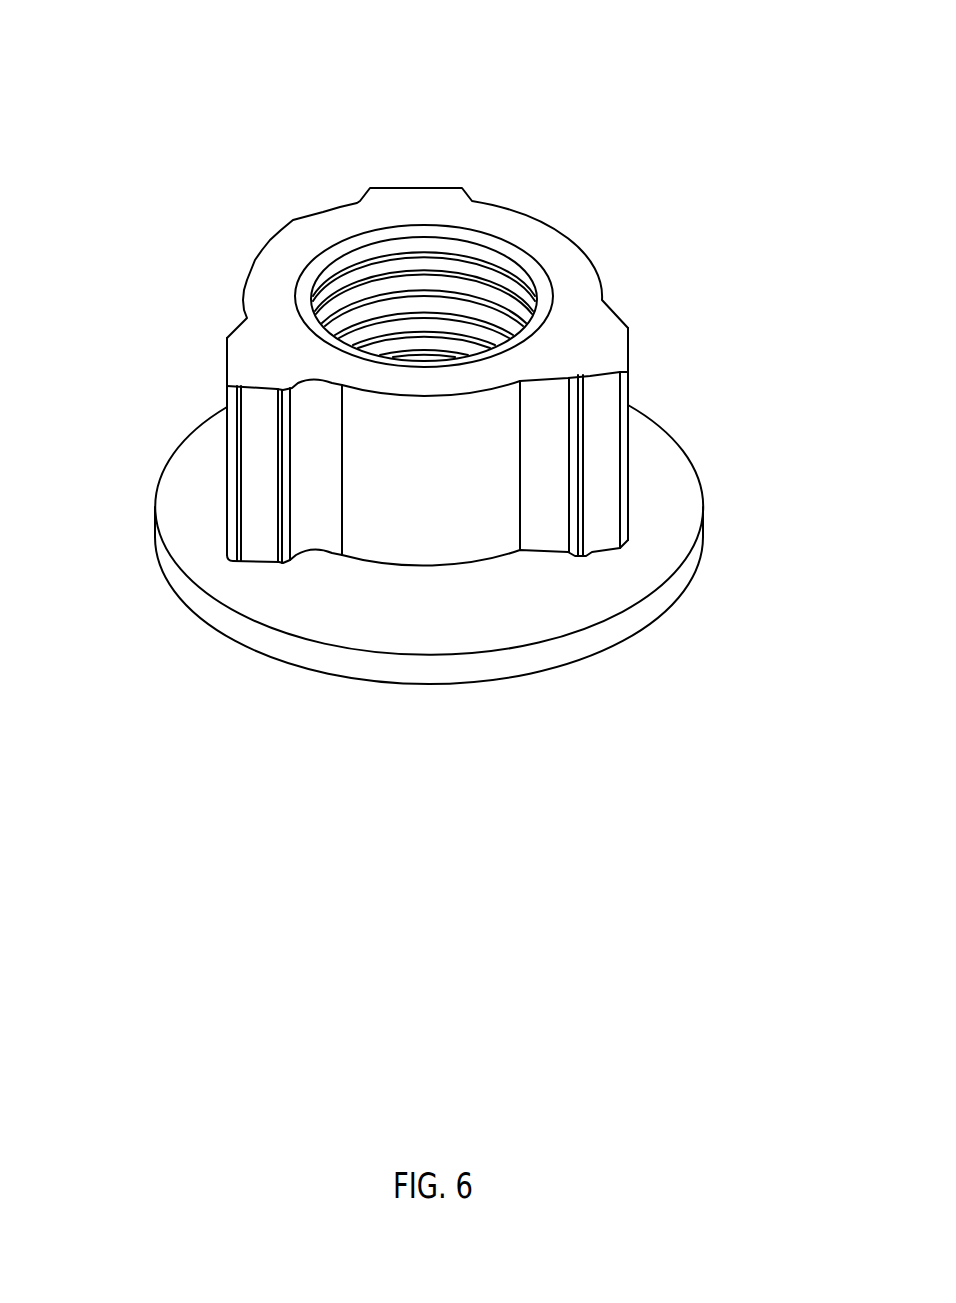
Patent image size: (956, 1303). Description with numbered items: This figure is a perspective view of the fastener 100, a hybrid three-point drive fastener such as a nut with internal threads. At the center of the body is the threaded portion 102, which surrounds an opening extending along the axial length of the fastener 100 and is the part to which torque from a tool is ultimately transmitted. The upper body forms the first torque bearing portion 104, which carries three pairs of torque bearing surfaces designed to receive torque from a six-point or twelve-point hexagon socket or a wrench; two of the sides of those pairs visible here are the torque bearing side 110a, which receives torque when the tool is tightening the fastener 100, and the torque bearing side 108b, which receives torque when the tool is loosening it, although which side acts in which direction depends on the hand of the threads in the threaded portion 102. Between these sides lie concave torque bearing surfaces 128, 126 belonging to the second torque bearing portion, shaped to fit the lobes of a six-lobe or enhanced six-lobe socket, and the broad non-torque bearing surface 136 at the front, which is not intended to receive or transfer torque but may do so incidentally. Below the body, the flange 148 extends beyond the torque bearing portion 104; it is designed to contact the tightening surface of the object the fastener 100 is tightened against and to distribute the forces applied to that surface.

The fastener 100 is at (135, 78).
The threaded portion 102 is at (488, 292).
The first torque bearing portion 104 is at (252, 362).
The flange 148 is at (192, 495).
The torque bearing side 110a is at (267, 535).
The torque bearing surface 128 is at (320, 528).
The non-torque bearing surface 136 is at (441, 522).
The torque bearing surface 126 is at (548, 522).
The torque bearing side 108b is at (605, 509).